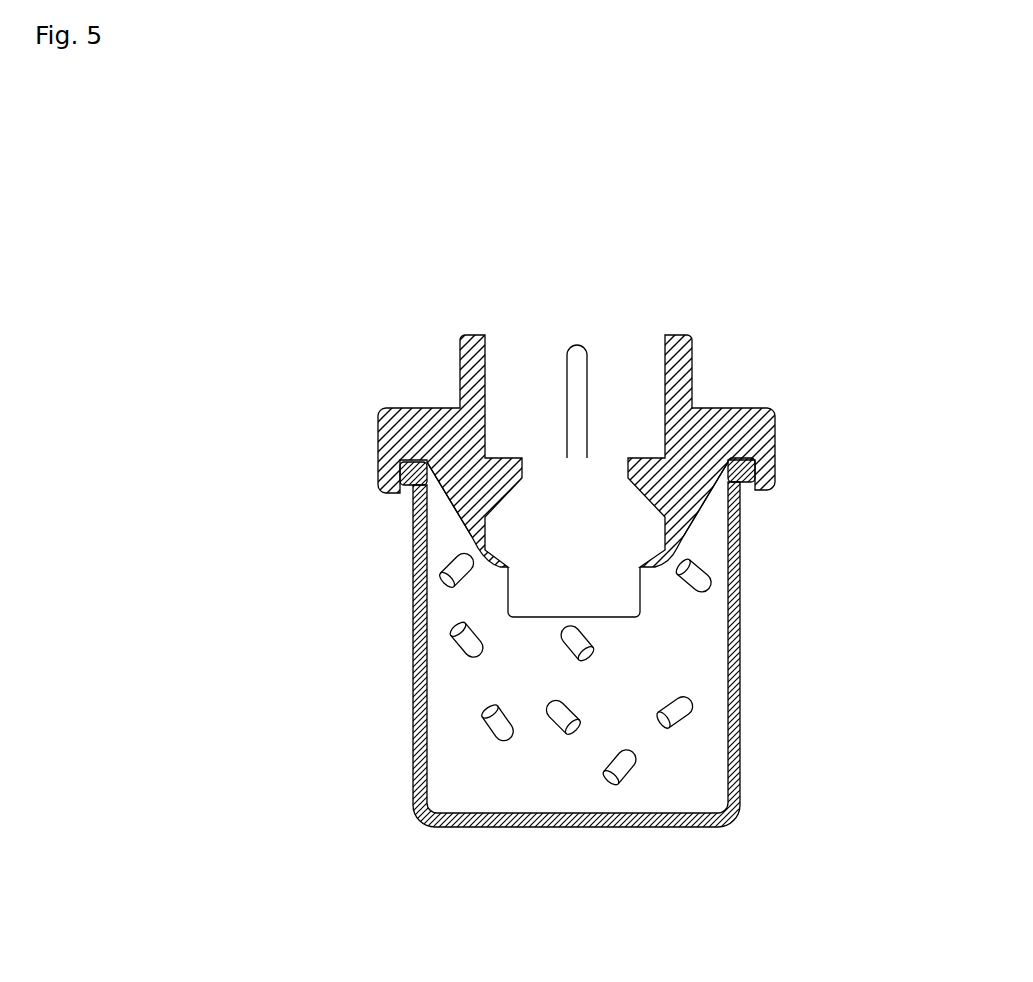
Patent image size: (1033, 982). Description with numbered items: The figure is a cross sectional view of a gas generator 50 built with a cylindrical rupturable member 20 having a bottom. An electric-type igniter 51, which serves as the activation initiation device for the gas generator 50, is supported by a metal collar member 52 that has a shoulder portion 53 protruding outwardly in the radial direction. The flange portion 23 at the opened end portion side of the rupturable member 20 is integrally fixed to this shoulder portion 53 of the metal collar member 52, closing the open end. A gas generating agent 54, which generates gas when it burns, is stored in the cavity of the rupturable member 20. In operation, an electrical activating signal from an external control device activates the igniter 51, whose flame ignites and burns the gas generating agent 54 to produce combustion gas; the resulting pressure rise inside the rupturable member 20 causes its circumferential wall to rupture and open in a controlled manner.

The rupturable member 20 is at (498, 681).
The flange portion 23 is at (396, 470).
The gas generator 50 is at (659, 460).
The electric-type igniter 51 is at (623, 587).
The metal collar member 52 is at (716, 498).
The shoulder portion 53 is at (775, 432).
The gas generating agent 54 is at (683, 710).